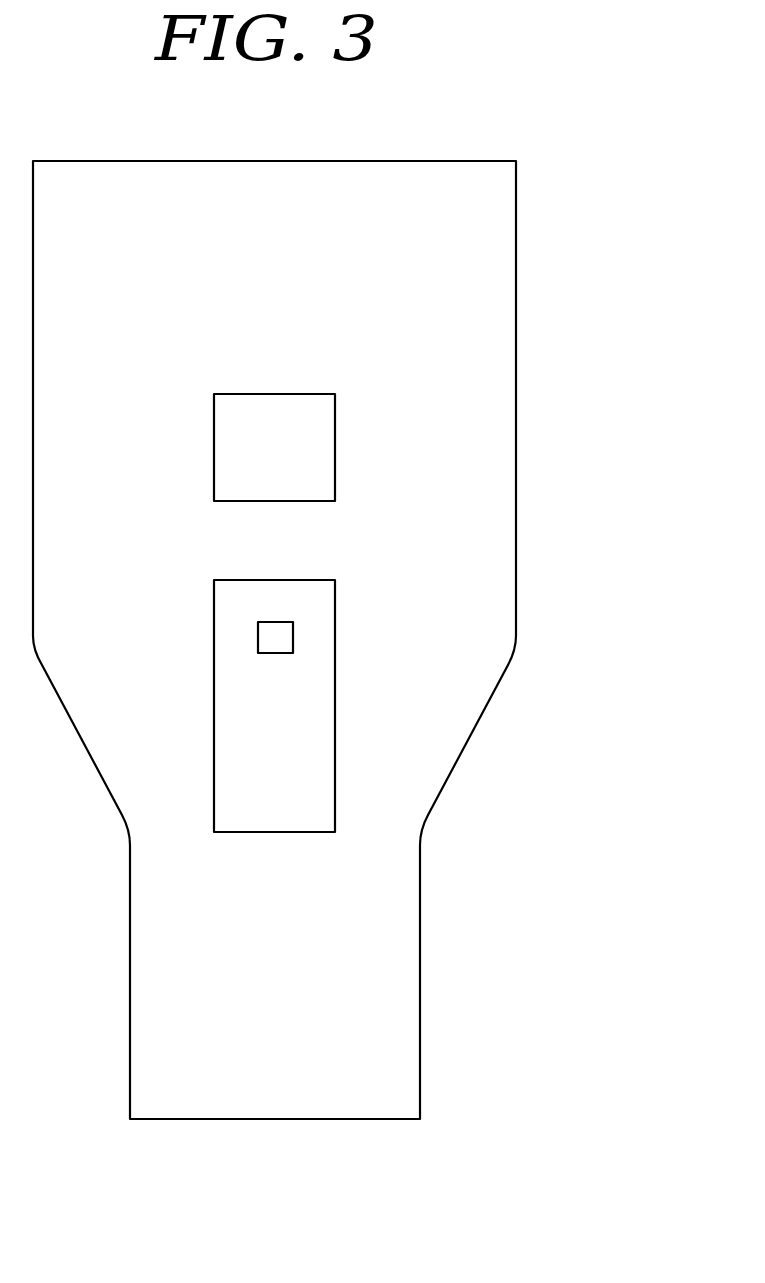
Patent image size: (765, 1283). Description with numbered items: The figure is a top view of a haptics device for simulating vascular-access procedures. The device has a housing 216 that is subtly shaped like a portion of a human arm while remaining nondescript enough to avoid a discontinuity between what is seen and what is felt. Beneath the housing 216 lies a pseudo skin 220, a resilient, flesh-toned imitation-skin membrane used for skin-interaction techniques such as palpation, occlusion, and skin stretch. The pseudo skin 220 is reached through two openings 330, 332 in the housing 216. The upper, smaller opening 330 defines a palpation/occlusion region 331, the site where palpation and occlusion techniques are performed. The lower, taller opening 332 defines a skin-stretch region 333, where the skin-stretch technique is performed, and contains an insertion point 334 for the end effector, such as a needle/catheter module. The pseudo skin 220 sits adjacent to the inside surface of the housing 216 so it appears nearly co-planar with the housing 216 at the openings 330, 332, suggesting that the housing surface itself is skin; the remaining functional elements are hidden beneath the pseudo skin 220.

The housing 216 is at (517, 463).
The pseudo skin 220 is at (275, 647).
The opening 330 is at (335, 420).
The palpation/occlusion region 331 is at (278, 372).
The opening 332 is at (214, 592).
The skin-stretch region 333 is at (270, 862).
The insertion point 334 is at (273, 635).